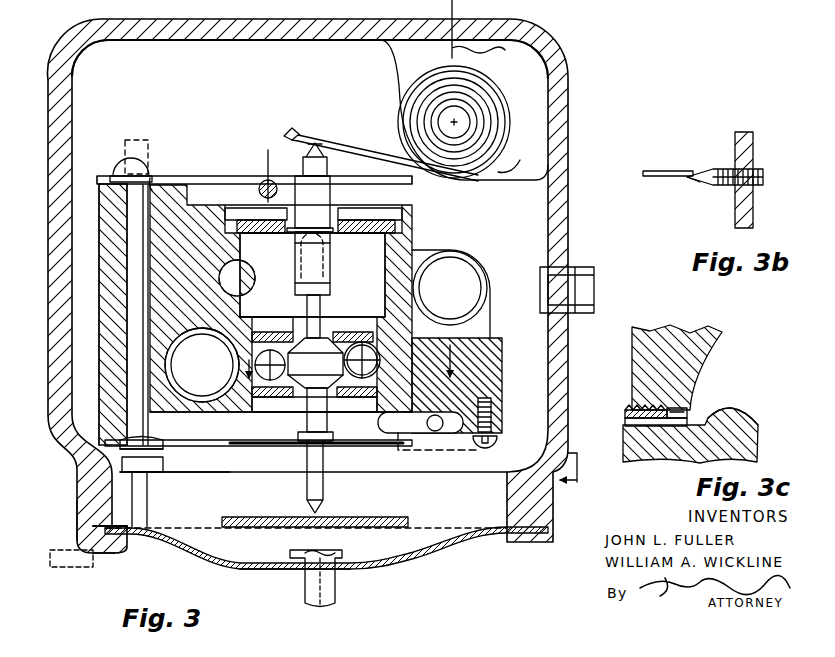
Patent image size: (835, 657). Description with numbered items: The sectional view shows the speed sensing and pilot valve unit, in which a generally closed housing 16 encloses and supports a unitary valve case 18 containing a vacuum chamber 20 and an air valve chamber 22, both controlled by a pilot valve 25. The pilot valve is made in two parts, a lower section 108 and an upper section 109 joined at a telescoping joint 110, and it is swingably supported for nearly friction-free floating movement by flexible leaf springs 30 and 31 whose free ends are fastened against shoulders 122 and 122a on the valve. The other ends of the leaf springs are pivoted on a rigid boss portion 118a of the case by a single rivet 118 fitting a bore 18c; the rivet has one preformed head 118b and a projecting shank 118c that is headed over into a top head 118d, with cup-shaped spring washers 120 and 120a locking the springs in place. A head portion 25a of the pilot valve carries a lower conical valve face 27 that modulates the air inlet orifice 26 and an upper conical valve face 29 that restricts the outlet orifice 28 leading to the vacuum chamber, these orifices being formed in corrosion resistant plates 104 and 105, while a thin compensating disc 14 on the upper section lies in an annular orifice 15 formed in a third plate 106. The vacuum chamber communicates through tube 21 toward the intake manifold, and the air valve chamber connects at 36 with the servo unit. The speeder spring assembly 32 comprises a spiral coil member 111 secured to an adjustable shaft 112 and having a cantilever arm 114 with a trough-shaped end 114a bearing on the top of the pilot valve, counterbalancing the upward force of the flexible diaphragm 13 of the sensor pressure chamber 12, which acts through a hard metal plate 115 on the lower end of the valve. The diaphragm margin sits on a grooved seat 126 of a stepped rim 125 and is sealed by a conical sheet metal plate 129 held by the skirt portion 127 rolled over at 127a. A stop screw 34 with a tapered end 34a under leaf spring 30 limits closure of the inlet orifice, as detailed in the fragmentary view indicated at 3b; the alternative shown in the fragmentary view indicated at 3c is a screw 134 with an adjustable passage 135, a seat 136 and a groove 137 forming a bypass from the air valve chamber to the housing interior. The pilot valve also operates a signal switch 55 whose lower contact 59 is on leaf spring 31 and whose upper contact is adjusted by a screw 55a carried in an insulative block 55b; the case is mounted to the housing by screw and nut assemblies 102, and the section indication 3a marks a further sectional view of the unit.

In FIG. 3, the housing 16 is at (570, 212).
In FIG. 3b, the housing 16 is at (755, 205).
In FIG. 3, the speeder spring assembly 32 is at (380, 92).
In FIG. 3, the section line 3a is at (447, 6).
In FIG. 3, the manually angularly adjustable shaft 112 is at (462, 121).
In FIG. 3, the spiral coil member 111 is at (517, 156).
In FIG. 3, the cantilever arm portion 114 is at (345, 150).
In FIG. 3, the trough shaped end portion 114a is at (294, 134).
In FIG. 3, the shoulder 122 is at (326, 172).
In FIG. 3, the leaf spring 30 is at (196, 176).
In FIG. 3b, the leaf spring 30 is at (660, 170).
In FIG. 3, the stop screw 34 is at (275, 176).
In FIG. 3b, the stop screw 34 is at (760, 168).
In FIG. 3, the section line 3b is at (262, 158).
In FIG. 3, the cup-shaped spring washer 120 is at (117, 168).
In FIG. 3, the rivet shank portion 118c is at (128, 142).
In FIG. 3, the rivet top head 118d is at (152, 172).
In FIG. 3, the rivet 118 is at (127, 328).
In FIG. 3, the boss portion 118a is at (99, 202).
In FIG. 3, the valve case 18 is at (96, 270).
In FIG. 3c, the valve case 18 is at (635, 452).
In FIG. 3, the bore 18c is at (112, 378).
In FIG. 3, the rivet head 118b is at (150, 473).
In FIG. 3, the cup-shaped spring washer 120a is at (168, 458).
In FIG. 3, the orifice plate 106 is at (397, 227).
In FIG. 3, the annular orifice 15 is at (333, 234).
In FIG. 3, the compensating disc 14 is at (318, 227).
In FIG. 3, the pilot valve 25 is at (333, 279).
In FIG. 3, the telescoping joint 110 is at (324, 262).
In FIG. 3, the upper pilot valve section 109 is at (294, 243).
In FIG. 3, the vacuum chamber 20 is at (312, 275).
In FIG. 3, the tube 21 is at (237, 278).
In FIG. 3, the air valve outlet orifice 28 is at (327, 336).
In FIG. 3, the orifice plate 105 is at (374, 338).
In FIG. 3, the lower valve orifice plate 104 is at (372, 393).
In FIG. 3, the restricted orifice 26 is at (326, 405).
In FIG. 3, the upper valve face 29 is at (315, 363).
In FIG. 3, the lower valve face 27 is at (315, 383).
In FIG. 3, the air valve chamber 22 is at (380, 360).
In FIG. 3, the ball seat 36 is at (378, 368).
In FIG. 3, the section line 3c is at (342, 376).
In FIG. 3, the screw and nut assembly 102 is at (327, 326).
In FIG. 3, the head portion 25a is at (221, 358).
In FIG. 3, the insulative block 55b is at (502, 370).
In FIG. 3, the adjusting screw 55a is at (443, 452).
In FIG. 3, the signal control switch 55 is at (388, 462).
In FIG. 3, the lower pilot valve section 108 is at (298, 436).
In FIG. 3, the lower contact 59 is at (364, 447).
In FIG. 3, the shoulder 122a is at (302, 447).
In FIG. 3, the leaf spring 31 is at (212, 473).
In FIG. 3, the hard metal plate 115 is at (256, 517).
In FIG. 3, the flexible diaphragm 13 is at (178, 527).
In FIG. 3, the sensor pressure chamber 12 is at (326, 548).
In FIG. 3, the sheet metal plate 129 is at (446, 550).
In FIG. 3, the rim portion 125 is at (78, 505).
In FIG. 3, the circular seat 126 is at (95, 526).
In FIG. 3, the skirt portion 127 is at (63, 556).
In FIG. 3, the rolled-over portion 127a is at (100, 556).
In FIG. 3b, the tapered end portion 34a is at (696, 184).
In FIG. 3c, the groove 137 is at (628, 408).
In FIG. 3c, the valve seat 136 is at (668, 412).
In FIG. 3c, the adjustable passage 135 is at (686, 414).
In FIG. 3c, the screw 134 is at (625, 434).